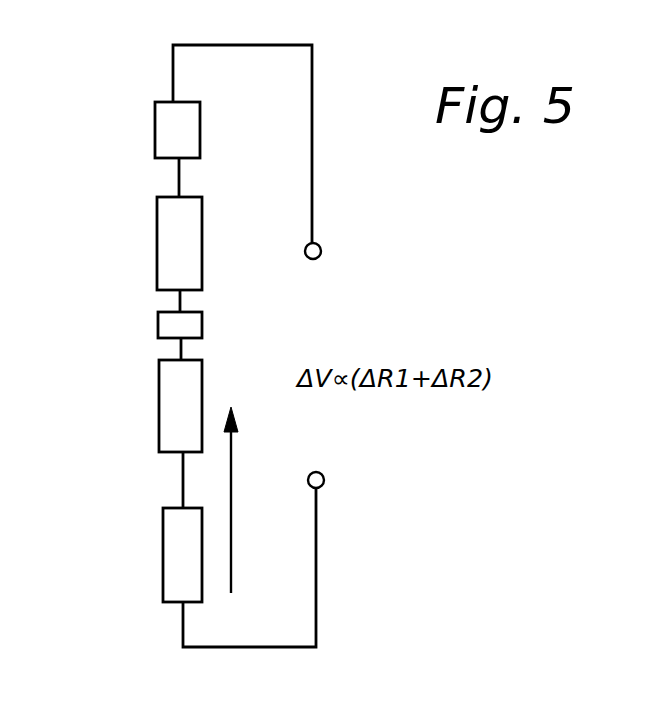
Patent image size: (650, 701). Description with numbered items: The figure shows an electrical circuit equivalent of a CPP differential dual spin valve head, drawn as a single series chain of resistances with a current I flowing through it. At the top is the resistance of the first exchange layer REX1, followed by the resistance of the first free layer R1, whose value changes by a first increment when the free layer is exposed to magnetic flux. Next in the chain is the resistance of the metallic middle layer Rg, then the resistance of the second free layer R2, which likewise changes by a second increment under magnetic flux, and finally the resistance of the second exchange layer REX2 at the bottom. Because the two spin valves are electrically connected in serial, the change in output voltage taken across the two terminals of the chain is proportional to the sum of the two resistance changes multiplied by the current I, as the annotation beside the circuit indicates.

The resistance of first exchange layer REX1 is at (142, 130).
The resistance of first free layer R1 is at (117, 243).
The resistance of metallic middle layer Rg is at (157, 326).
The resistance of second free layer R2 is at (117, 406).
The resistance of second exchange layer REX2 is at (143, 555).
The current I is at (231, 516).